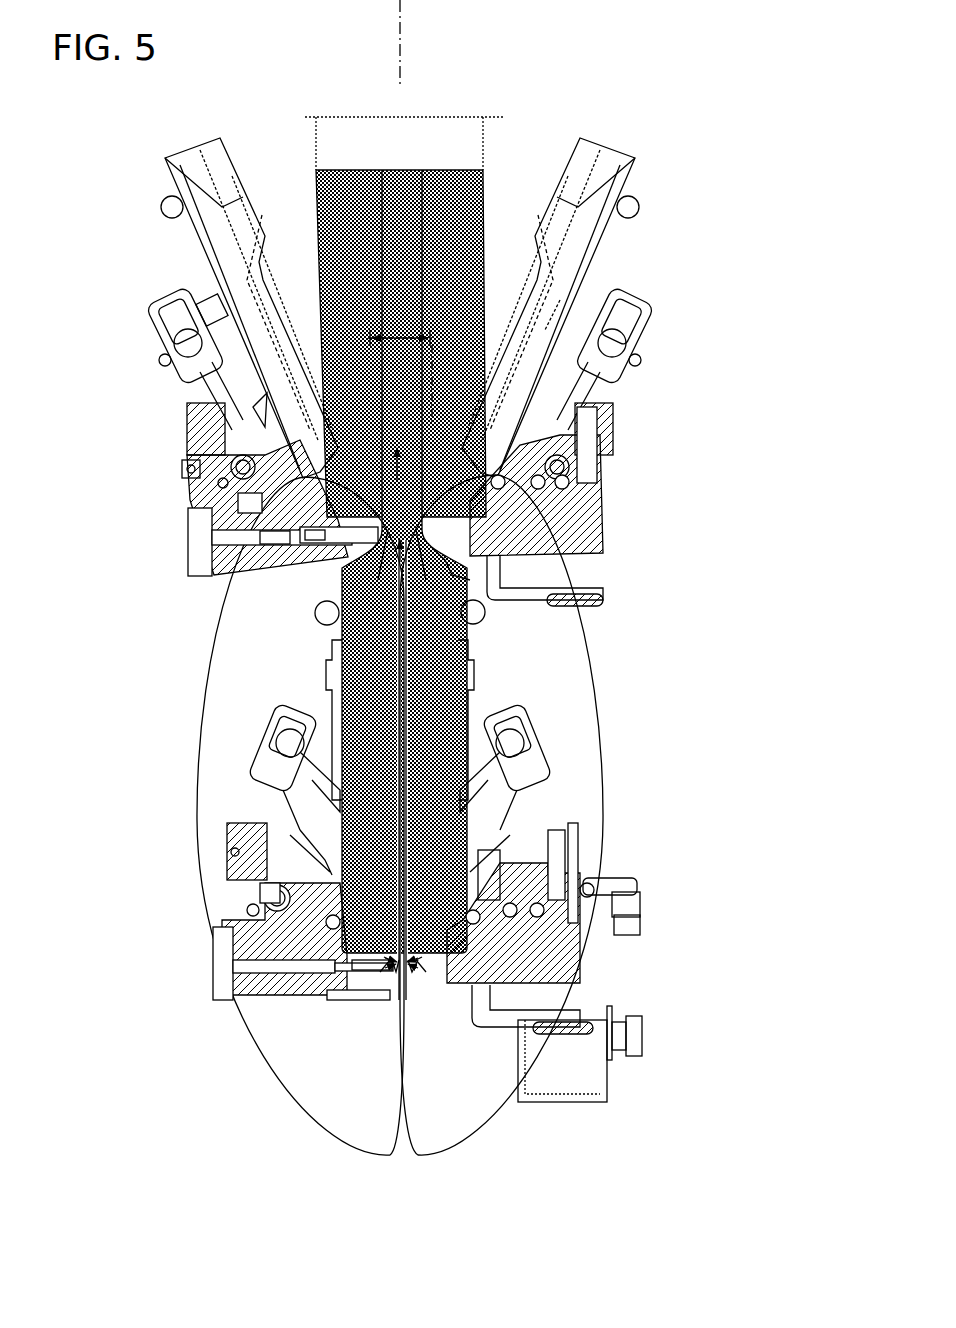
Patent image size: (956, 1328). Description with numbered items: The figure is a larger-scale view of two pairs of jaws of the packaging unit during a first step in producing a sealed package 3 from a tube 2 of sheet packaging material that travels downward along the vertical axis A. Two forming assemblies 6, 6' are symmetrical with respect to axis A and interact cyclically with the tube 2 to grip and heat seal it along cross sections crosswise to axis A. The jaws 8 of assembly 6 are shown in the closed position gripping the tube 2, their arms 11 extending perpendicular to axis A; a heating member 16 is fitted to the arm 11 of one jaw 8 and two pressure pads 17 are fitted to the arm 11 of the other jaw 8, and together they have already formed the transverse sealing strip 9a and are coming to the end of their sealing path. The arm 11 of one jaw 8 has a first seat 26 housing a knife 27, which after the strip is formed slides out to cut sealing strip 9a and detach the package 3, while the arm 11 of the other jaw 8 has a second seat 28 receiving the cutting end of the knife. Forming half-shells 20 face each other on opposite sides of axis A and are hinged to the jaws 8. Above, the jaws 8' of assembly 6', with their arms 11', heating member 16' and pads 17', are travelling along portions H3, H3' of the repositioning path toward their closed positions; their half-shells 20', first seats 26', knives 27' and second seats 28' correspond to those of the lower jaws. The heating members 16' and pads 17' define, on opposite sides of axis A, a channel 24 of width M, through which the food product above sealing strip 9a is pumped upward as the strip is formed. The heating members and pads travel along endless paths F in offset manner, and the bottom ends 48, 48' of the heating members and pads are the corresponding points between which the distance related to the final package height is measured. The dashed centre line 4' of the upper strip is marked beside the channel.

The axis A is at (398, 38).
The tube of sheet packaging material 2 is at (550, 296).
The sealed package 3 is at (466, 828).
The upper strip centre line 4' is at (439, 385).
The forming assembly 6 is at (694, 711).
The forming assembly 6' is at (688, 330).
The jaw 8 is at (388, 819).
The jaw 8' is at (374, 370).
The sealing strip 9a is at (396, 961).
The arm 11 is at (411, 962).
The arm 11' is at (382, 506).
The heating member 16 is at (433, 914).
The heating member 16' is at (441, 457).
The pressure pad 17 is at (372, 1007).
The pressure pad 17' is at (365, 465).
The forming half-shell 20 is at (391, 720).
The forming half-shell 20' is at (396, 308).
The channel 24 is at (402, 499).
The first seat 26 is at (296, 1012).
The first seat 26' is at (257, 582).
The knife 27 is at (345, 1007).
The knife 27' is at (312, 573).
The second seat 28 is at (428, 1006).
The second seat 28' is at (493, 585).
The bottom end 48 is at (404, 1023).
The bottom end 48' is at (394, 616).
The endless path F is at (138, 640).
The portion of repositioning path H3 is at (313, 387).
The portion of repositioning path H3' is at (489, 384).
The width of channel M is at (400, 328).